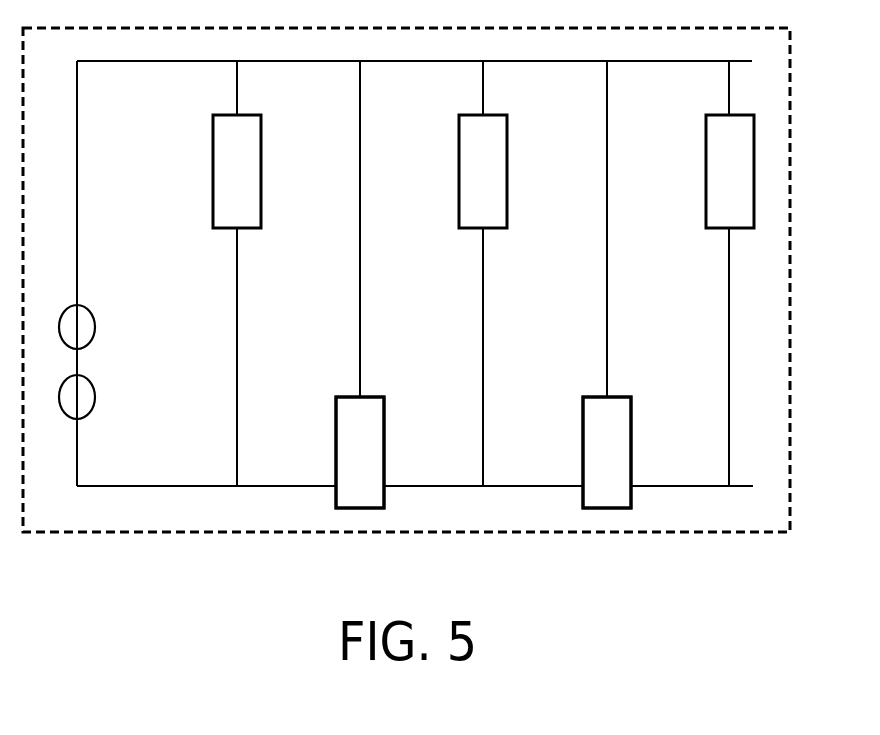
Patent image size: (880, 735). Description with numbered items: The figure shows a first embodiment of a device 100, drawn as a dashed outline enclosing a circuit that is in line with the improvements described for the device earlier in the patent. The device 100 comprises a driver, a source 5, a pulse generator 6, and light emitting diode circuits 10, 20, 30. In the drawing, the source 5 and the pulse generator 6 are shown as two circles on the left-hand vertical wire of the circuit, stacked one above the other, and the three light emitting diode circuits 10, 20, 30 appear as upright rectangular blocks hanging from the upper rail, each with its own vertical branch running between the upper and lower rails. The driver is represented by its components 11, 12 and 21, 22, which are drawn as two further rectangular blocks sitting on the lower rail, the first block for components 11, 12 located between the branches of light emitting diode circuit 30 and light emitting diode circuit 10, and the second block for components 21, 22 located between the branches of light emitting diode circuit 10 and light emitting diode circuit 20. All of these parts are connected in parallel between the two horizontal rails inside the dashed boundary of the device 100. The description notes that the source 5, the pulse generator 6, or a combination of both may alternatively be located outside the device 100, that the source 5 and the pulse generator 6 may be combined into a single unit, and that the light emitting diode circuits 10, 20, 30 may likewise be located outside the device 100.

The device 100 is at (735, 532).
The light emitting diode circuit 30 is at (213, 168).
The light emitting diode circuit 10 is at (459, 168).
The light emitting diode circuit 20 is at (706, 168).
The driver component 11 is at (345, 397).
The driver component 12 is at (360, 452).
The driver component 21 is at (590, 397).
The driver component 22 is at (607, 452).
The pulse generator 6 is at (96, 327).
The source 5 is at (96, 397).